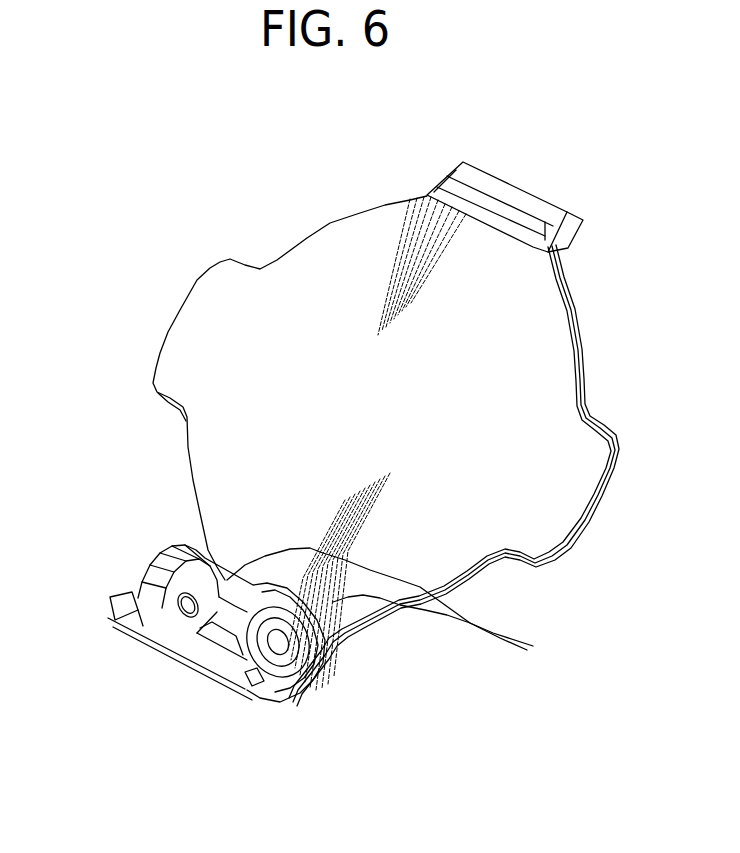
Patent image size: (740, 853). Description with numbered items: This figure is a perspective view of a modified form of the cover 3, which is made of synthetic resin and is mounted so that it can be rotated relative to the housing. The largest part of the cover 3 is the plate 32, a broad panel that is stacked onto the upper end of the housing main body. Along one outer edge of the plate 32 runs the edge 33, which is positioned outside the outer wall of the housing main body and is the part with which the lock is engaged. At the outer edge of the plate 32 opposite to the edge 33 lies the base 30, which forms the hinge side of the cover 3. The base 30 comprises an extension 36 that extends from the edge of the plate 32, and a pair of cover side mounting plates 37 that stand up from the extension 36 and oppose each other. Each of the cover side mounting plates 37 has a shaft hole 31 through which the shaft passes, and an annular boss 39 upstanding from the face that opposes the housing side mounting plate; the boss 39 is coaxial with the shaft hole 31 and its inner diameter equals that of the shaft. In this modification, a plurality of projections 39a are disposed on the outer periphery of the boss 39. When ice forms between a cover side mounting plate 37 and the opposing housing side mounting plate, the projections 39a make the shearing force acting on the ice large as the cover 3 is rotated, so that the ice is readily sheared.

The cover 3 is at (605, 174).
The base 30 is at (270, 646).
The shaft hole 31 is at (163, 660).
The plate 32 is at (290, 371).
The edge 33 is at (566, 205).
The extension 36 is at (197, 663).
The cover side mounting plates 37 is at (395, 611).
The boss 39 is at (337, 657).
The projections 39a is at (243, 687).